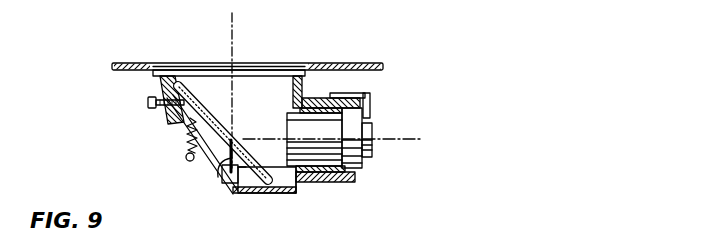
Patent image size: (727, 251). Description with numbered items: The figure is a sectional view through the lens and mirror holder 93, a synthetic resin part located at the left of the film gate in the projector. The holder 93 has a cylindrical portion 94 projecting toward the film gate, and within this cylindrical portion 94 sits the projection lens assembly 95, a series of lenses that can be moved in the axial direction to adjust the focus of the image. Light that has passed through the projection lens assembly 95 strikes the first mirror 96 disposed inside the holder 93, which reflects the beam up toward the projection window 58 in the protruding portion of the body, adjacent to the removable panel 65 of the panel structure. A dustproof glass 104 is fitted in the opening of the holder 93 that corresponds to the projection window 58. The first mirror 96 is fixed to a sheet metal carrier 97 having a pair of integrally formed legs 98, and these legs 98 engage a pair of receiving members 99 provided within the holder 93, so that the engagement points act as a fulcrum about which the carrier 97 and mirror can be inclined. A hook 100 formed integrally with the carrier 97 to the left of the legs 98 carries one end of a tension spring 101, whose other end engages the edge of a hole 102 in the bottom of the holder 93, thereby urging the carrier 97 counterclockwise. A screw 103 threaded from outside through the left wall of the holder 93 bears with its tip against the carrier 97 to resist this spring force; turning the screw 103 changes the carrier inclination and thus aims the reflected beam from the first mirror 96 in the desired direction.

The projection window 58 is at (175, 63).
The removable panel 65 is at (125, 63).
The lens and mirror holder 93 is at (275, 194).
The cylindrical portion 94 is at (320, 186).
The projection lens assembly 95 is at (356, 137).
The first mirror 96 is at (228, 116).
The sheet metal carrier 97 is at (266, 175).
The legs 98 is at (220, 162).
The receiving members 99 is at (230, 192).
The hook 100 is at (166, 120).
The tension spring 101 is at (186, 148).
The hole 102 is at (195, 163).
The screw 103 is at (148, 103).
The dustproof glass 104 is at (255, 68).